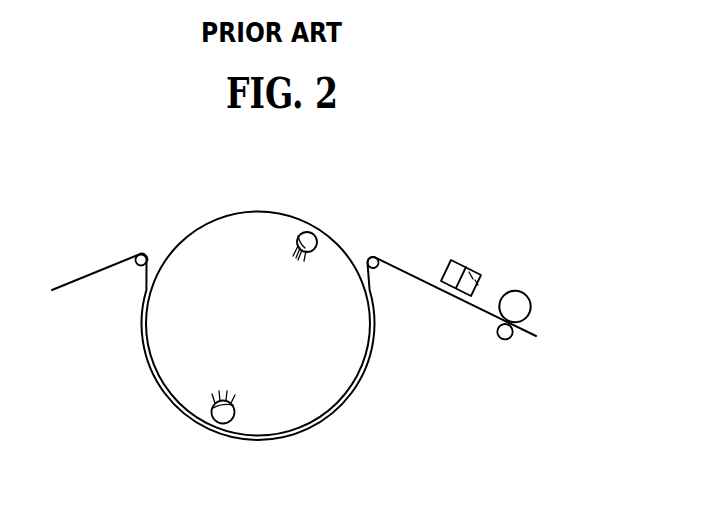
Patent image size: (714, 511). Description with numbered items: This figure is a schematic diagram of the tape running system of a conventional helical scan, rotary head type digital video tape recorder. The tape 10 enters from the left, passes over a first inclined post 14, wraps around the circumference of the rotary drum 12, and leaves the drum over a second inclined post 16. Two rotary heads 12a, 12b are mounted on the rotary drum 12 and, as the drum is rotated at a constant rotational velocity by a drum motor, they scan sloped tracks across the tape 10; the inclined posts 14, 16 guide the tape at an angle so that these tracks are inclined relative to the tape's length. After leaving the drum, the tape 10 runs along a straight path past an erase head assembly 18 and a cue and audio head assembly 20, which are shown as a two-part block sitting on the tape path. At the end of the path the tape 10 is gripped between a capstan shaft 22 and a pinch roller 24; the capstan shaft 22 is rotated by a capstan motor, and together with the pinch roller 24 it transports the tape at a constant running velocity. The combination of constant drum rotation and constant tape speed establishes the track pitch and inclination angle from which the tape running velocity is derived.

The tape 10 is at (96, 272).
The rotary drum 12 is at (252, 212).
The rotary head 12a is at (311, 253).
The rotary head 12b is at (235, 403).
The inclined post 14 is at (141, 254).
The inclined post 16 is at (371, 257).
The erase head assembly 18 is at (452, 260).
The cue & audio head assembly 20 is at (480, 274).
The capstan shaft 22 is at (503, 339).
The pinch roller 24 is at (527, 294).